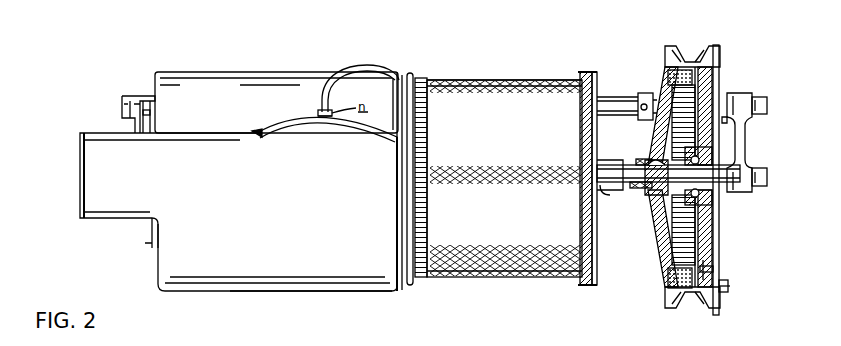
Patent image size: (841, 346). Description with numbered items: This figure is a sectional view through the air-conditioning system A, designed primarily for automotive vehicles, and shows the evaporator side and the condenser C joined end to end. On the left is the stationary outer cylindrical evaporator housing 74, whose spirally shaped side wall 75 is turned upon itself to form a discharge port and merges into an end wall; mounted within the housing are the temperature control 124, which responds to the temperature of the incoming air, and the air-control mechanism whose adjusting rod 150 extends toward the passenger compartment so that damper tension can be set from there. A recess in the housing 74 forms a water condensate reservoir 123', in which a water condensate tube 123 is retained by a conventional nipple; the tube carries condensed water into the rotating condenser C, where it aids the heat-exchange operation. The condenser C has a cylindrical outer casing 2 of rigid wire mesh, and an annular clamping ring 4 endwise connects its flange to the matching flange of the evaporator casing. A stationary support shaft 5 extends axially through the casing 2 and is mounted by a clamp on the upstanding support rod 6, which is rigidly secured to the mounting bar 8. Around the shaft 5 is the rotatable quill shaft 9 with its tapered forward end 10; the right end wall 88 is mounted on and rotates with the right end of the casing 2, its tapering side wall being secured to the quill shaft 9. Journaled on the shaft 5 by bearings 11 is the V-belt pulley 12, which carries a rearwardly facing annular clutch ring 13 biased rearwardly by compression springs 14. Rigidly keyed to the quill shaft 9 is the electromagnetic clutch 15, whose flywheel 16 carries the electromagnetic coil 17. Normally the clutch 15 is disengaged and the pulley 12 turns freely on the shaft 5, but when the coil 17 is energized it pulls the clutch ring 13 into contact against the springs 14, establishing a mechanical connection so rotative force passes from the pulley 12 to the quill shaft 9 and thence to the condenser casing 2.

The cylindrical outer casing 2 is at (537, 78).
The annular clamping ring 4 is at (412, 76).
The stationary support shaft 5 is at (767, 176).
The support rod 6 is at (746, 140).
The mounting bar 8 is at (767, 106).
The rotatable quill shaft 9 is at (622, 165).
The tapered forward end 10 is at (652, 200).
The bearings 11 is at (700, 192).
The V-belt pulley 12 is at (719, 305).
The annular clutch ring 13 is at (705, 268).
The compression springs 14 is at (726, 286).
The electromagnetic clutch 15 is at (668, 286).
The flywheel 16 is at (660, 245).
The electromagnetic coil 17 is at (680, 64).
The outer cylindrical evaporator housing 74 is at (210, 284).
The spirally shaped side wall 75 is at (292, 284).
The right end wall 88 is at (592, 78).
The water condensate tube 123 is at (358, 76).
The water condensate reservoir 123' is at (314, 76).
The temperature control 124 is at (150, 245).
The adjusting rod 150 is at (138, 112).
The air-conditioning system A is at (218, 71).
The condenser C is at (490, 78).